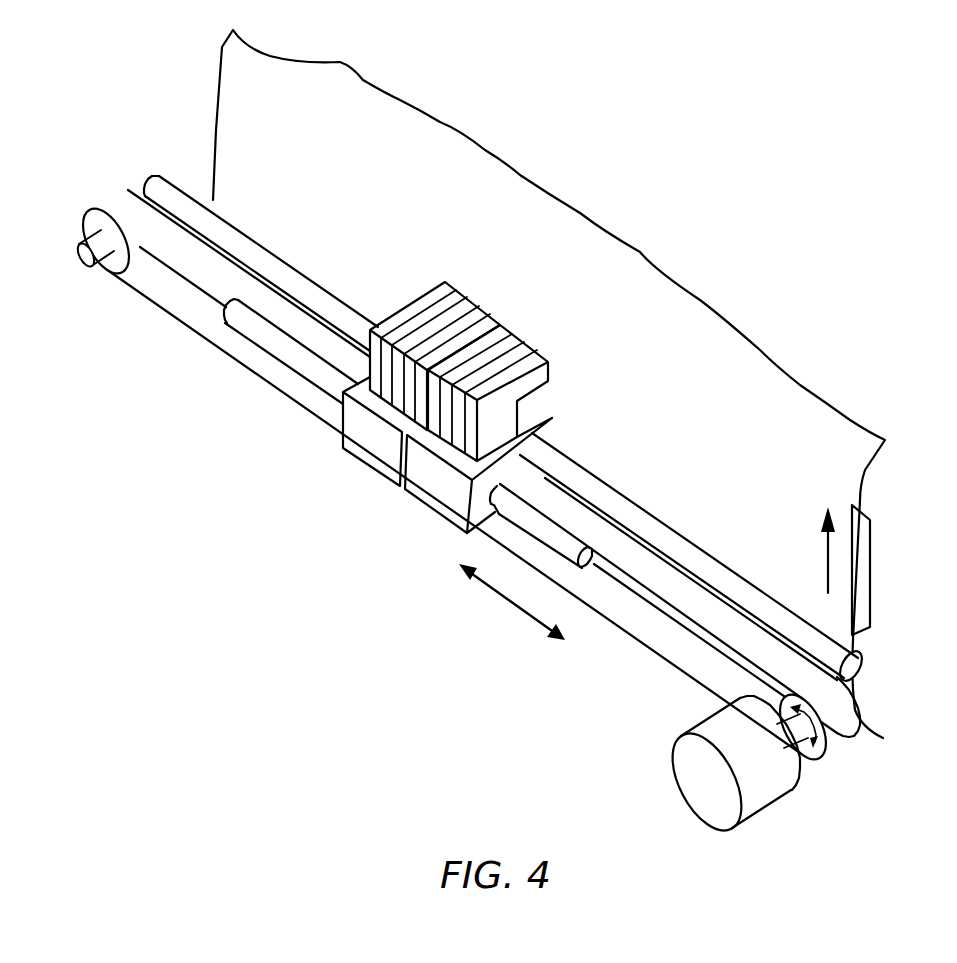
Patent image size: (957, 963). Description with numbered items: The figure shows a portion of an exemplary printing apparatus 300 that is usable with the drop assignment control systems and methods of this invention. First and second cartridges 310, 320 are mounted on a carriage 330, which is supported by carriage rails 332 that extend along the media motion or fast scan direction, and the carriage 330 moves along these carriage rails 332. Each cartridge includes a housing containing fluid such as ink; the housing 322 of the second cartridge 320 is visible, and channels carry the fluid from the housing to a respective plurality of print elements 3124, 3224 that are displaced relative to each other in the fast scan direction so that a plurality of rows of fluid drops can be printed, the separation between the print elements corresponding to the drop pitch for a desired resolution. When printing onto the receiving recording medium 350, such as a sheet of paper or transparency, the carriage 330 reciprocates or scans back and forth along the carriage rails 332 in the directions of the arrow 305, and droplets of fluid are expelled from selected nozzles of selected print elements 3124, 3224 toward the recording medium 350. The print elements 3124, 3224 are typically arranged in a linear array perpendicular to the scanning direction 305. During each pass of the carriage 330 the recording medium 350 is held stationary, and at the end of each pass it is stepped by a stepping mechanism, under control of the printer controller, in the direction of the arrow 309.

The printing apparatus 300 is at (209, 378).
The arrow indicating scanning direction 305 is at (517, 608).
The arrow indicating stepping direction 309 is at (832, 562).
The first cartridge 310 is at (487, 352).
The print elements 3124 is at (480, 284).
The second cartridge 320 is at (529, 381).
The print elements 3224 is at (539, 327).
The housing 322 is at (457, 440).
The carriage 330 is at (533, 432).
The carriage rails 332 is at (563, 530).
The recording medium 350 is at (792, 413).